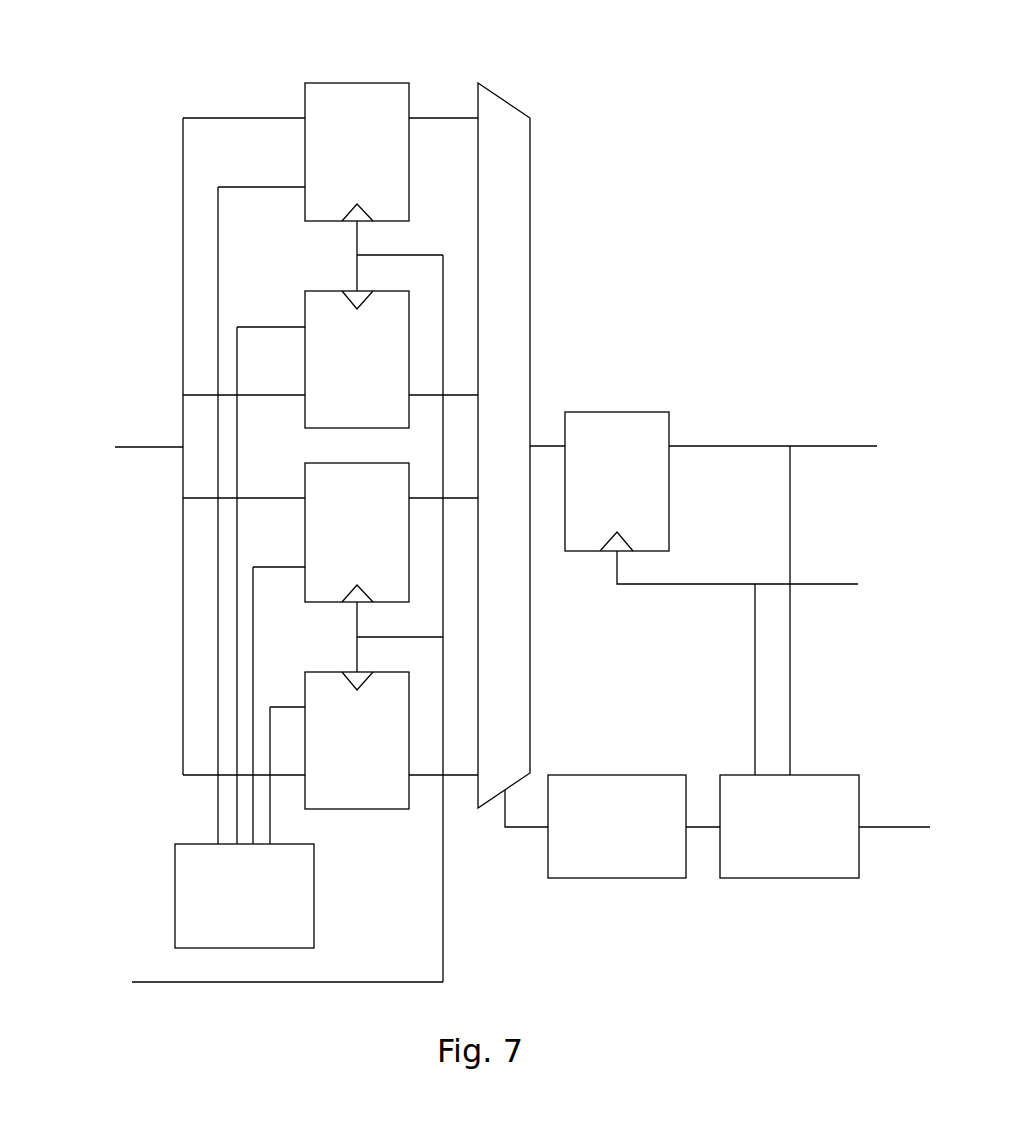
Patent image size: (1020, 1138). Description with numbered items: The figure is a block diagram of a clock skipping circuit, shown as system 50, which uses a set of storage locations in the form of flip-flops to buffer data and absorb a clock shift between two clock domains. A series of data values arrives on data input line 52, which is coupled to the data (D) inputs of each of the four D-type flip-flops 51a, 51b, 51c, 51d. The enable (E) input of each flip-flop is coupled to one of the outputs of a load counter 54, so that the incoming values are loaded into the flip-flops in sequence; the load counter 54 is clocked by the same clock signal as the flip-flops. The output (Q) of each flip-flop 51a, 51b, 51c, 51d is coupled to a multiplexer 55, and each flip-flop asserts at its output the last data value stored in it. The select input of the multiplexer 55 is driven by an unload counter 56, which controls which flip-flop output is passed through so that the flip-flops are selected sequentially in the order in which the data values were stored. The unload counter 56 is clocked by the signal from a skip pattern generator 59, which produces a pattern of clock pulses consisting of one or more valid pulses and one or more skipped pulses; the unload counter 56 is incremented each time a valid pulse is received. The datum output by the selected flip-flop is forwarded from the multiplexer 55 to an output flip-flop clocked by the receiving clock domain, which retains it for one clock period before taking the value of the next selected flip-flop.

The system 50 is at (572, 145).
The D-type flip-flop 51a is at (357, 83).
The D-type flip-flop 51b is at (330, 291).
The D-type flip-flop 51c is at (322, 603).
The D-type flip-flop 51d is at (357, 809).
The data input line 52 is at (150, 445).
The load counter 54 is at (231, 934).
The multiplexer 55 is at (491, 459).
The unload counter 56 is at (603, 866).
The skip pattern generator 59 is at (776, 866).